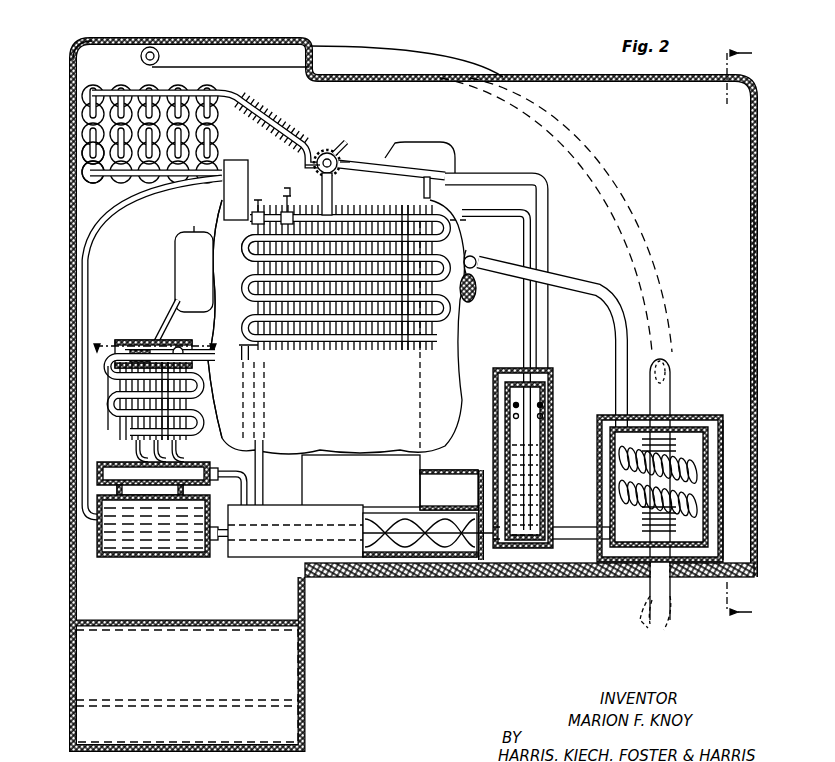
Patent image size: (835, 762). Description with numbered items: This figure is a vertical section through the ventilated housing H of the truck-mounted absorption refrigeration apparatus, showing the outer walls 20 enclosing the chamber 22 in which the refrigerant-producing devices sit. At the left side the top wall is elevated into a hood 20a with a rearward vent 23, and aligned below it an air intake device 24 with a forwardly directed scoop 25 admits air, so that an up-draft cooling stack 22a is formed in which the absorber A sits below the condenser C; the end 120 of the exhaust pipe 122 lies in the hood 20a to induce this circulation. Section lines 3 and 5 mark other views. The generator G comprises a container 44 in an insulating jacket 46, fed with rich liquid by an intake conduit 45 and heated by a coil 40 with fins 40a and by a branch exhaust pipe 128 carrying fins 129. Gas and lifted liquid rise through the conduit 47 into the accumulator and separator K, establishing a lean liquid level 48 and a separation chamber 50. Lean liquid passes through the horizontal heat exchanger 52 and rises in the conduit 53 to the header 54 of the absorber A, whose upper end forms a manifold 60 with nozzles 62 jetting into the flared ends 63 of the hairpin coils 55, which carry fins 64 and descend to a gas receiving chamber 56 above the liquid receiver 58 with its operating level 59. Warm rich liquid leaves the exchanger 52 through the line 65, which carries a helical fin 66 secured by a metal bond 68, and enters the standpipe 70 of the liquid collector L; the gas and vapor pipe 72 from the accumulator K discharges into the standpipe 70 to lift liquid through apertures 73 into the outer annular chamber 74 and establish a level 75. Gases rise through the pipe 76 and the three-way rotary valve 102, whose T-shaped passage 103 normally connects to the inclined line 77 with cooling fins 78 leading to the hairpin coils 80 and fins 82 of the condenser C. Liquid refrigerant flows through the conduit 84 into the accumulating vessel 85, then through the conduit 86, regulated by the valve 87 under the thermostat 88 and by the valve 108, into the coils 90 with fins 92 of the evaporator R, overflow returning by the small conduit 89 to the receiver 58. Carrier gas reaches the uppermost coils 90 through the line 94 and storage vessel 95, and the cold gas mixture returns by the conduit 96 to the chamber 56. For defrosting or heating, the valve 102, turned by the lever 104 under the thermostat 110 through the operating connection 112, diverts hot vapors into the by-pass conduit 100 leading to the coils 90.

The outer walls 20 is at (70, 247).
The hood 20a is at (90, 38).
The chamber 22 is at (577, 100).
The air column or cooling stack 22a is at (110, 272).
The vent 23 is at (92, 54).
The air intake device 24 is at (148, 748).
The air scoop or intake 25 is at (264, 718).
The section line 3- 3 is at (745, 336).
The section line 5- 5 is at (152, 344).
The heating coil 40 is at (700, 489).
The heat distributing fins 40a is at (697, 466).
The container 44 is at (688, 420).
The intake conduit 45 is at (580, 520).
The insulating casing or jacket 46 is at (723, 420).
The upwardly extending conduit 47 is at (600, 322).
The lean absorption liquid level 48 is at (476, 286).
The separation chamber 50 is at (476, 262).
The horizontal heat exchanger 52 is at (345, 522).
The conduit 53 is at (266, 470).
The header 54 is at (118, 342).
The hairpin coils 55 is at (104, 372).
The gas receiving chamber 56 is at (110, 473).
The liquid receiver 58 is at (120, 558).
The liquid operating level 59 is at (173, 514).
The manifold 60 is at (179, 347).
The nozzles 62 is at (153, 348).
The flared coil ends 63 is at (137, 340).
The fins 64 is at (189, 430).
The line 65 is at (220, 541).
The helical fin 66 is at (428, 520).
The metal bond 68 is at (440, 536).
The standpipe 70 is at (552, 469).
The gas and vapor conducting pipe 72 is at (503, 222).
The apertures 73 is at (545, 404).
The outer annular chamber 74 is at (547, 439).
The liquid level 75 is at (546, 418).
The pipe 76 is at (547, 178).
The inclined line 77 is at (330, 150).
The cooling fins 78 is at (283, 106).
The hairpin coils 80 is at (90, 155).
The cooling fins 82 is at (90, 180).
The conduit 84 is at (140, 177).
The liquid refrigerant accumulating vessel 85 is at (236, 160).
The conduit 86 is at (254, 262).
The valve 87 is at (290, 186).
The thermostat 88 is at (258, 199).
The overflow conduit 89 is at (150, 240).
The evaporator coils 90 is at (360, 210).
The fins 92 is at (405, 210).
The carrier gas line 94 is at (215, 243).
The carrier gas storage vessel 95 is at (178, 257).
The conduit 96 is at (258, 356).
The by-pass conduit 100 is at (340, 194).
The three-way rotary valve 102 is at (340, 150).
The T-shaped passage 103 is at (305, 166).
The lever 104 is at (352, 152).
The valve 108 is at (241, 192).
The thermostat 110 is at (431, 190).
The operating connection 112 is at (432, 148).
The exhaust pipe end 120 is at (157, 50).
The exhaust pipe 122 is at (367, 58).
The branch exhaust pipe 128 is at (640, 602).
The heat distributing fins 129 is at (680, 537).
The absorber A is at (92, 441).
The condenser C is at (84, 139).
The generator G is at (693, 465).
The housing H is at (515, 76).
The accumulator and separator K is at (476, 351).
The liquid collector L is at (540, 458).
The evaporator or refrigerator R is at (350, 376).